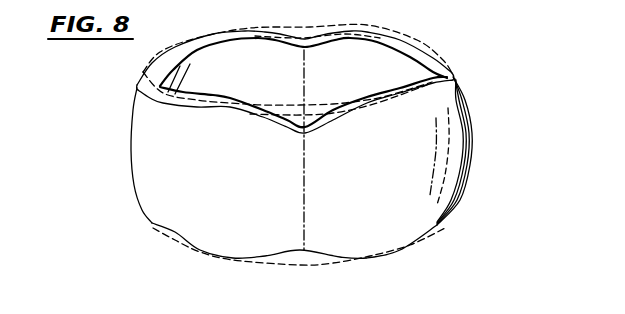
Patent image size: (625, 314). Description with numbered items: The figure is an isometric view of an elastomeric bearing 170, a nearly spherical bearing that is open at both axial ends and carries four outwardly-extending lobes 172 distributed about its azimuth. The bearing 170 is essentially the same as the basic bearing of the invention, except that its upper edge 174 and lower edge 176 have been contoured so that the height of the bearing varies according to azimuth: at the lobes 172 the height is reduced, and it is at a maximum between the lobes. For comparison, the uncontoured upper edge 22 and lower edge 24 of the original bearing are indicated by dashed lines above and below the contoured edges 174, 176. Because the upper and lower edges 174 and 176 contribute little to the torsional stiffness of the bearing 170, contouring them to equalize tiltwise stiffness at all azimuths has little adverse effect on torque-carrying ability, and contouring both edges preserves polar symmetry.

The bearing 170 is at (299, 146).
The upper edge 22 is at (307, 28).
The lower edge 24 is at (305, 266).
The outwardly-extending lobes 172 is at (129, 151).
The upper edge 174 is at (345, 128).
The lower edge 176 is at (336, 258).